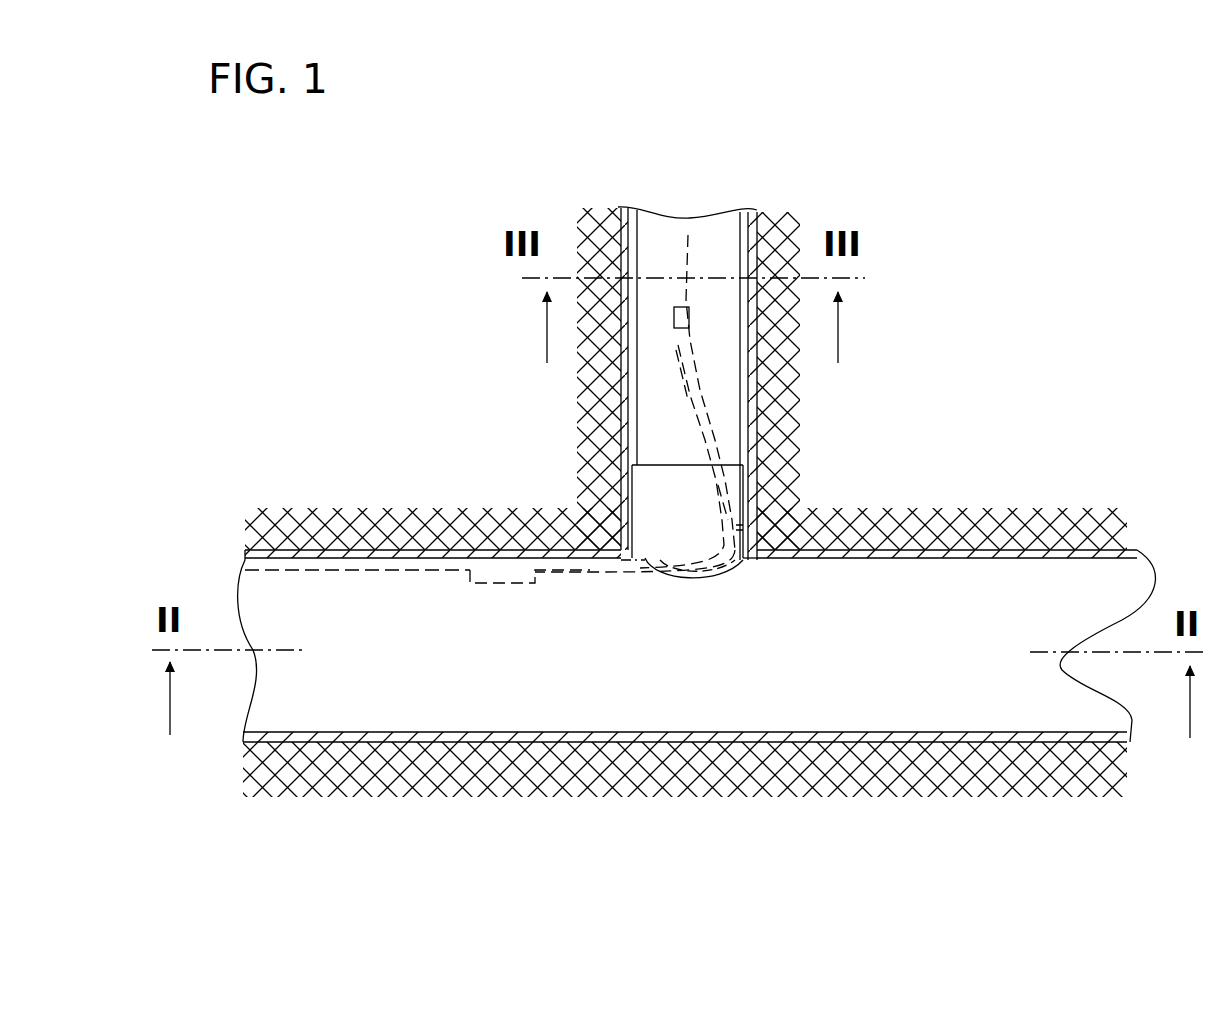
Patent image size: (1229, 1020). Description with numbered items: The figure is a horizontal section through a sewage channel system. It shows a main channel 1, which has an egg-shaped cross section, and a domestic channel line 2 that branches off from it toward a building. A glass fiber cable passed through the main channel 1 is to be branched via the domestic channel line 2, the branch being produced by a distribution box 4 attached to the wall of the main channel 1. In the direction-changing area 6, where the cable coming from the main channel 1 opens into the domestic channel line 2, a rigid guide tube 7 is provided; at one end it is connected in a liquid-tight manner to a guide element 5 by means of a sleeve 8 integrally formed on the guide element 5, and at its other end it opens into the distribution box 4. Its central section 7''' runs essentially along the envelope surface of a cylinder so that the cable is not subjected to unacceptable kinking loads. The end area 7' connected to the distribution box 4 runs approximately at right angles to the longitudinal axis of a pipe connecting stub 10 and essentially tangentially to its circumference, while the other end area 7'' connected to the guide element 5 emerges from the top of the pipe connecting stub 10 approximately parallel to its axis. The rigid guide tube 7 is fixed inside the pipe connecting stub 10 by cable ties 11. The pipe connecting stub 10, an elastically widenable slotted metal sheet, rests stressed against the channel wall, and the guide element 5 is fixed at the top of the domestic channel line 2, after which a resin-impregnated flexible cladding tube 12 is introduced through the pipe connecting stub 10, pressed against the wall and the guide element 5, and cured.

The main channel 1 is at (667, 742).
The domestic channel line 2 is at (760, 222).
The distribution box 4 is at (503, 565).
The guide element 5 is at (688, 237).
The direction-changing area 6 is at (727, 590).
The rigid guide tube 7 is at (635, 505).
The end area of the rigid guide tube 7' is at (596, 613).
The other end area of the rigid guide tube 7'' is at (582, 375).
The central section of the rigid guide tube 7''' is at (602, 475).
The sleeve 8 is at (693, 320).
The pipe connecting stub 10 is at (745, 493).
The cable ties 11 is at (757, 557).
The flexible cladding tube 12 is at (652, 235).